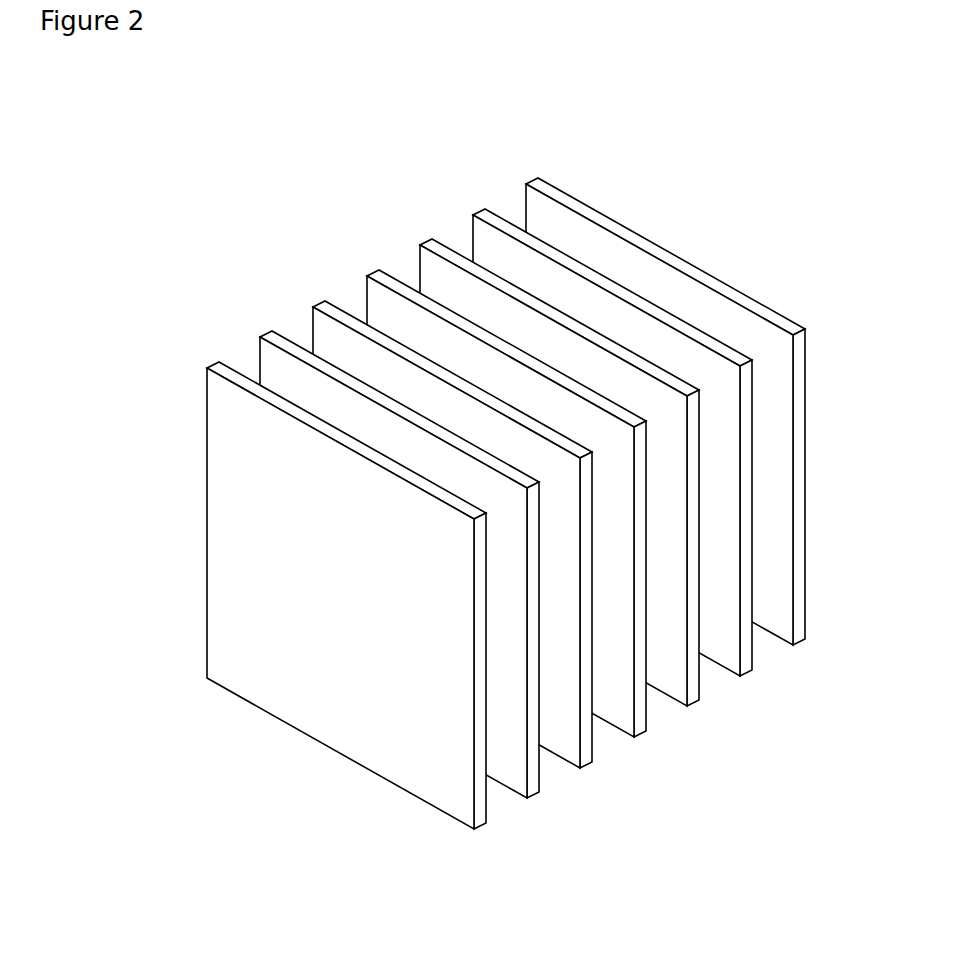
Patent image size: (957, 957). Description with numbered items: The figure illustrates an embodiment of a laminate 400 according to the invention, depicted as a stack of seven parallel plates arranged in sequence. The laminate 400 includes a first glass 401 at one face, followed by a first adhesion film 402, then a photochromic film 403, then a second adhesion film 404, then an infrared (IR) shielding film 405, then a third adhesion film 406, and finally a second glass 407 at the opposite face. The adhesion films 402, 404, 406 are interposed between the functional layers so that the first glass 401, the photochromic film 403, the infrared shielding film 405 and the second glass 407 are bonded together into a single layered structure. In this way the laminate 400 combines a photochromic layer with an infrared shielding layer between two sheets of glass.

The laminate 400 is at (222, 206).
The first glass 401 is at (212, 366).
The first adhesion film 402 is at (539, 792).
The photochromic film 403 is at (319, 305).
The second adhesion film 404 is at (646, 731).
The infrared (IR) shielding film 405 is at (426, 243).
The third adhesion film 406 is at (752, 670).
The second glass 407 is at (534, 178).